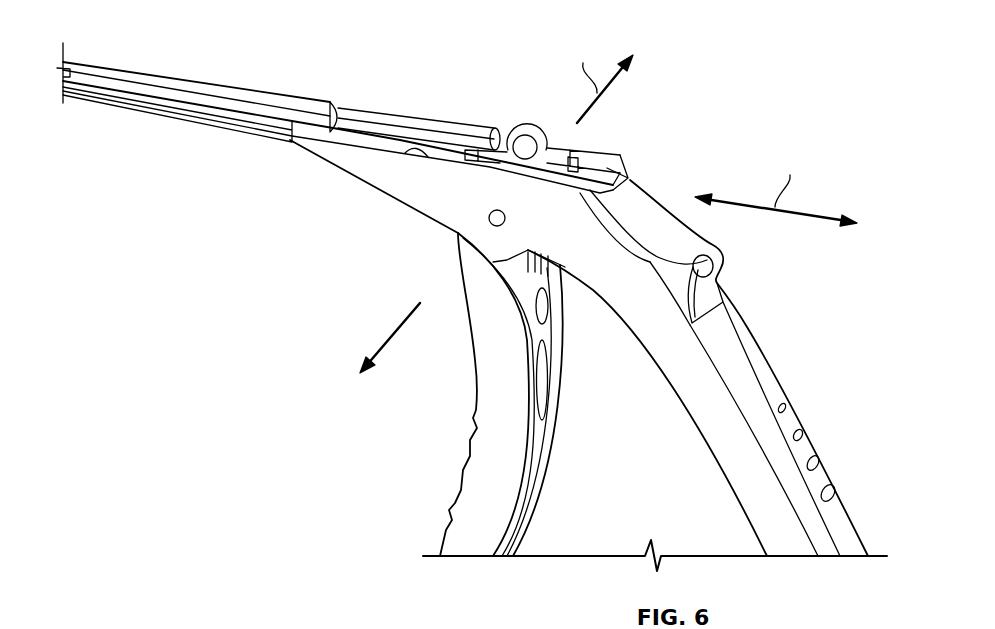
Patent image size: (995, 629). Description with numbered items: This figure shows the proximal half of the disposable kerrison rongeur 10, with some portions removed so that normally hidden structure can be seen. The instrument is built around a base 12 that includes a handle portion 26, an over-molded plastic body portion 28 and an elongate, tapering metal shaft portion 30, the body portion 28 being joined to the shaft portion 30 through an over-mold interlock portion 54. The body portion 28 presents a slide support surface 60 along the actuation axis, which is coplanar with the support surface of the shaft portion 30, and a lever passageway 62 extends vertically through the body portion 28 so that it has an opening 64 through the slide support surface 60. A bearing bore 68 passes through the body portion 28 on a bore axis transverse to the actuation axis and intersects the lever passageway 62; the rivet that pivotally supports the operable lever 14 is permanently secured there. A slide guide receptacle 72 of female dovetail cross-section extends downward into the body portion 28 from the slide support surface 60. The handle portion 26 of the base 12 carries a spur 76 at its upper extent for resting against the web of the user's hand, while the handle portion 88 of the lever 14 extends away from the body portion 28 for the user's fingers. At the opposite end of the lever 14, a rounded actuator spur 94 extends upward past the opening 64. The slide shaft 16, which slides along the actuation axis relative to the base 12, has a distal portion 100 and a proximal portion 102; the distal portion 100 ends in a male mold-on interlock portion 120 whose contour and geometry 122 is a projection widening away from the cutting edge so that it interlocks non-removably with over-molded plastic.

The disposable kerrison rongeur 10 is at (110, 45).
The base 12 is at (780, 352).
The operable lever 14 is at (457, 478).
The slide shaft 16 is at (280, 80).
The handle portion 26 is at (844, 520).
The body portion 28 is at (396, 200).
The shaft portion 30 is at (185, 120).
The over-mold interlock portion 54 is at (383, 163).
The slide support surface 60 is at (450, 238).
The lever passageway 62 is at (449, 250).
The opening 64 is at (556, 152).
The bearing bore 68 is at (508, 208).
The slide guide receptacle 72 is at (627, 172).
The spur 76 is at (717, 253).
The handle portion 88 is at (453, 547).
The actuator spur 94 is at (534, 125).
The distal portion 100 is at (166, 70).
The proximal portion 102 is at (655, 584).
The male mold-on interlock portion 120 is at (408, 120).
The contour and geometry 122 is at (461, 115).